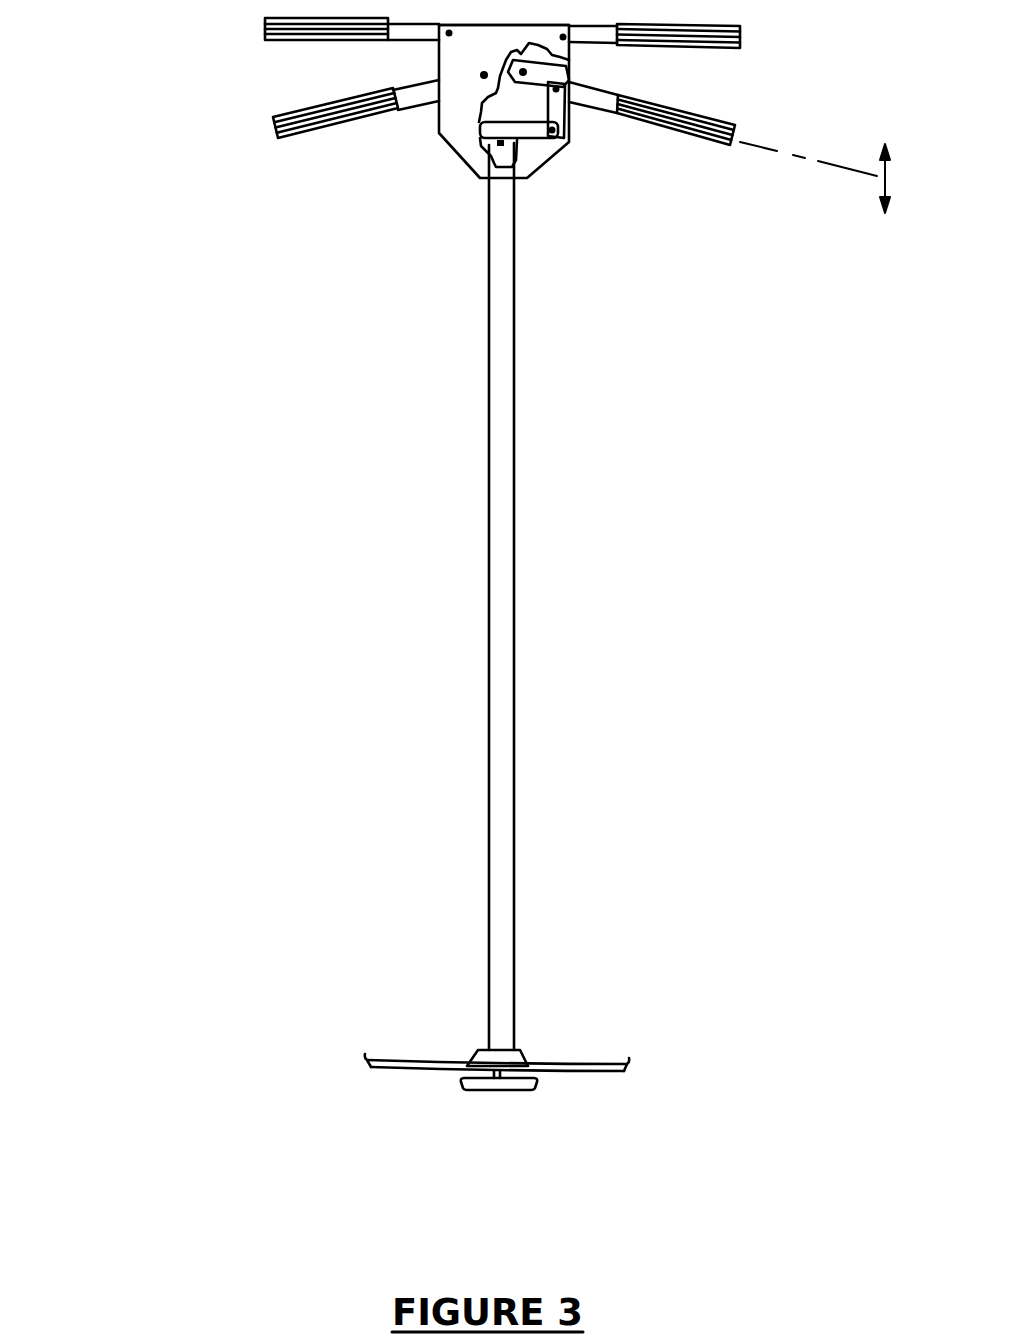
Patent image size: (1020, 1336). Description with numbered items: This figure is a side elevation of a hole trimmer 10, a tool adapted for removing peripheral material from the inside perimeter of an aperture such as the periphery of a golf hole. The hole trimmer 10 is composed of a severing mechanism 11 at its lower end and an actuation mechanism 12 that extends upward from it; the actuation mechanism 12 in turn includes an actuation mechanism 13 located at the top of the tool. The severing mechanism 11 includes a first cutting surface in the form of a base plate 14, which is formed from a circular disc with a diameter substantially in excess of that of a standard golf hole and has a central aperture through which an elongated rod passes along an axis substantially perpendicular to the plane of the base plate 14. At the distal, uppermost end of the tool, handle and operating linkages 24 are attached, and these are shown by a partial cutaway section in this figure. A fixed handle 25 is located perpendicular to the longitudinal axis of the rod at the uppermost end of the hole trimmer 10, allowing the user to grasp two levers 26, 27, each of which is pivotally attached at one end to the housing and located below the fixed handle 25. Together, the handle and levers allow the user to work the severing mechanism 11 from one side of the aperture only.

The hole trimmer 10 is at (664, 681).
The severing mechanism 11 is at (631, 1112).
The actuation mechanism 12 is at (546, 578).
The actuation mechanism 13 is at (590, 199).
The base plate 14 is at (580, 1053).
The handle and operating linkages 24 is at (739, 86).
The fixed handle 25 is at (232, 34).
The lever 26 is at (265, 153).
The lever 27 is at (740, 164).